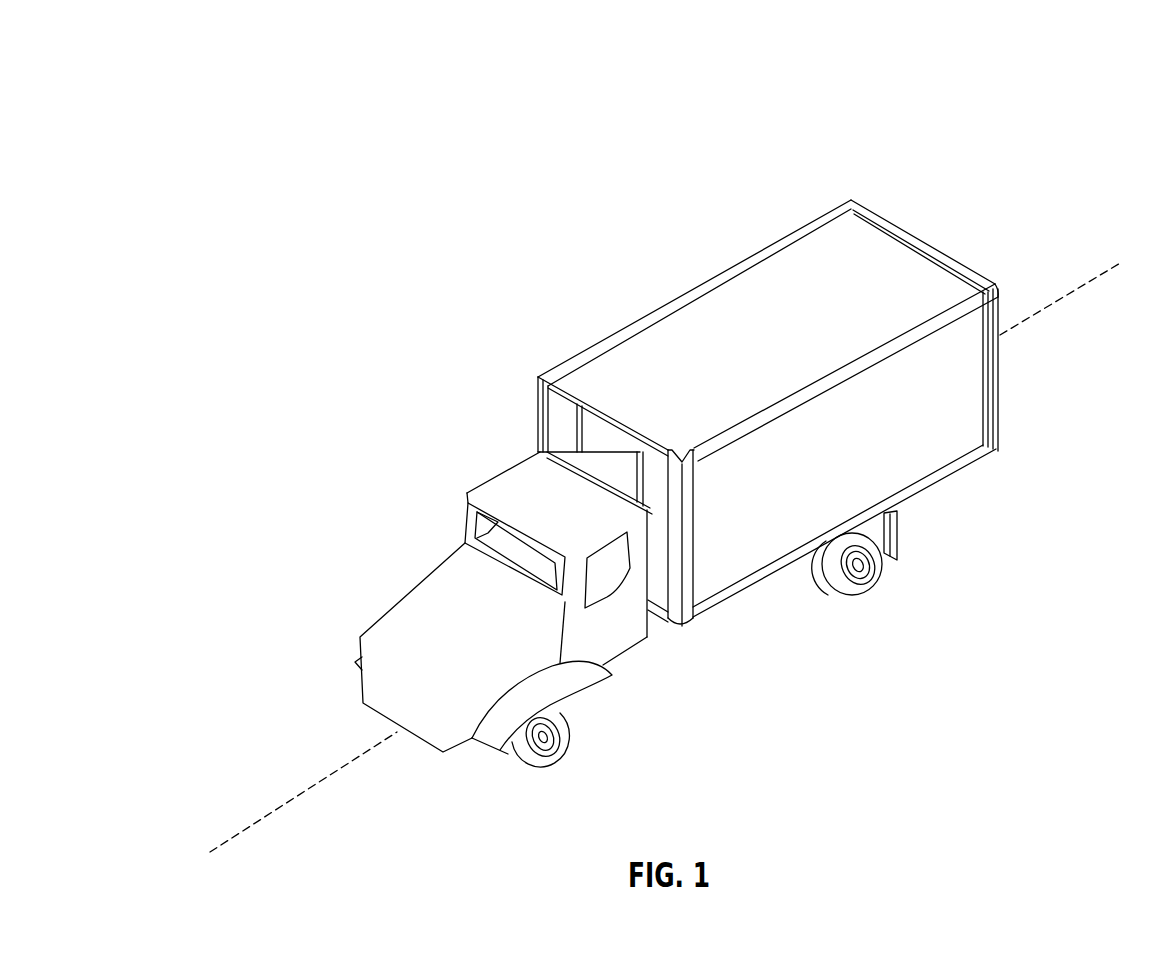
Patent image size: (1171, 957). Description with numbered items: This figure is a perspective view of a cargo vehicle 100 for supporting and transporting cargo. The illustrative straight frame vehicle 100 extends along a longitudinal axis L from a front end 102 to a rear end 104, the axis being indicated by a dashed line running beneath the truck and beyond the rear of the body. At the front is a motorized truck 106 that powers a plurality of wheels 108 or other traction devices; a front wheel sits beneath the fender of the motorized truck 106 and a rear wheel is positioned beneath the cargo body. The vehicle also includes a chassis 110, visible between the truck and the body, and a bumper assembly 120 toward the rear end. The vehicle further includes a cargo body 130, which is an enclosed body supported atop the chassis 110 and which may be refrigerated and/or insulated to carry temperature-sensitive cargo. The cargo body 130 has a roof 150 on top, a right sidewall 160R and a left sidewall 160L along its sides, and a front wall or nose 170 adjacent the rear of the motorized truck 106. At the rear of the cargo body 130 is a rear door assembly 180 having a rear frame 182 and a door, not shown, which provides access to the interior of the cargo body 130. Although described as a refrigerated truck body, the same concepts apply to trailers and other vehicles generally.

The cargo vehicle 100 is at (948, 118).
The front end 102 is at (270, 660).
The rear end 104 is at (1082, 203).
The motorized truck 106 is at (425, 602).
The wheels 108 is at (857, 597).
The chassis 110 is at (662, 620).
The bumper assembly 120 is at (1023, 487).
The cargo body 130 is at (677, 283).
The roof 150 is at (775, 270).
The right sidewall 160R is at (605, 338).
The left sidewall 160L is at (747, 567).
The front wall 170 is at (558, 422).
The rear door assembly 180 is at (778, 388).
The rear frame 182 is at (997, 403).
The longitudinal axis L is at (310, 787).